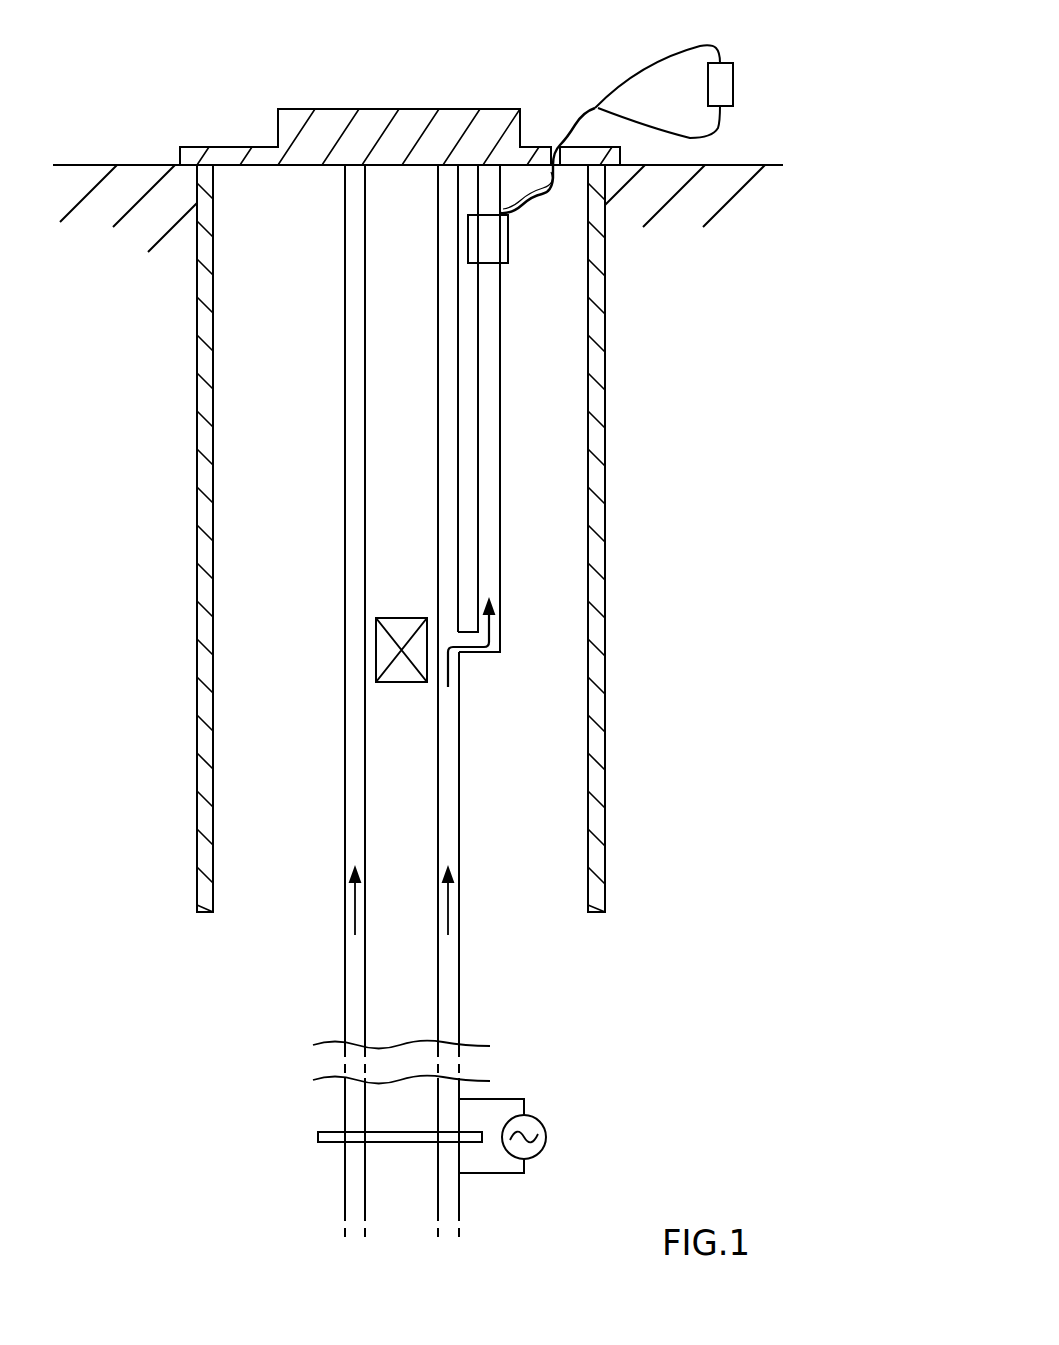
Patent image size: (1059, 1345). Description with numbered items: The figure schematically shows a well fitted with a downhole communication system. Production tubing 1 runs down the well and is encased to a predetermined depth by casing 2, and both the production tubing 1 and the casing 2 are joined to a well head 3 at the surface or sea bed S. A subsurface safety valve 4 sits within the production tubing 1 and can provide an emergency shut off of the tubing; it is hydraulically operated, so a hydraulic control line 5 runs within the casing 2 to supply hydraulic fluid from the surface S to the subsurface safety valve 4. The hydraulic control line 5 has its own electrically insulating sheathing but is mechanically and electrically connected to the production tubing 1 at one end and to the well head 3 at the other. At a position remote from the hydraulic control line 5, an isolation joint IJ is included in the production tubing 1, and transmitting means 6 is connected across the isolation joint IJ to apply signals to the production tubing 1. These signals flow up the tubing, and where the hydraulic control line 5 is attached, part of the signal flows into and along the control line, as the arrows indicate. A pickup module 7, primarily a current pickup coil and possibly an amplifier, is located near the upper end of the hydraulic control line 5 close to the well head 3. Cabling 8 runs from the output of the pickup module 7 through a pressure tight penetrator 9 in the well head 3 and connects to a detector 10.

The production tubing 1 is at (455, 752).
The casing 2 is at (597, 845).
The well head 3 is at (315, 125).
The subsurface safety valve 4 is at (380, 640).
The hydraulic control line 5 is at (488, 420).
The transmitting means 6 is at (533, 1128).
The pickup module 7 is at (495, 238).
The cabling 8 is at (588, 110).
The pressure tight penetrator 9 is at (553, 147).
The detector 10 is at (724, 90).
The surface or sea bed S is at (744, 165).
The isolation joint IJ is at (337, 1135).